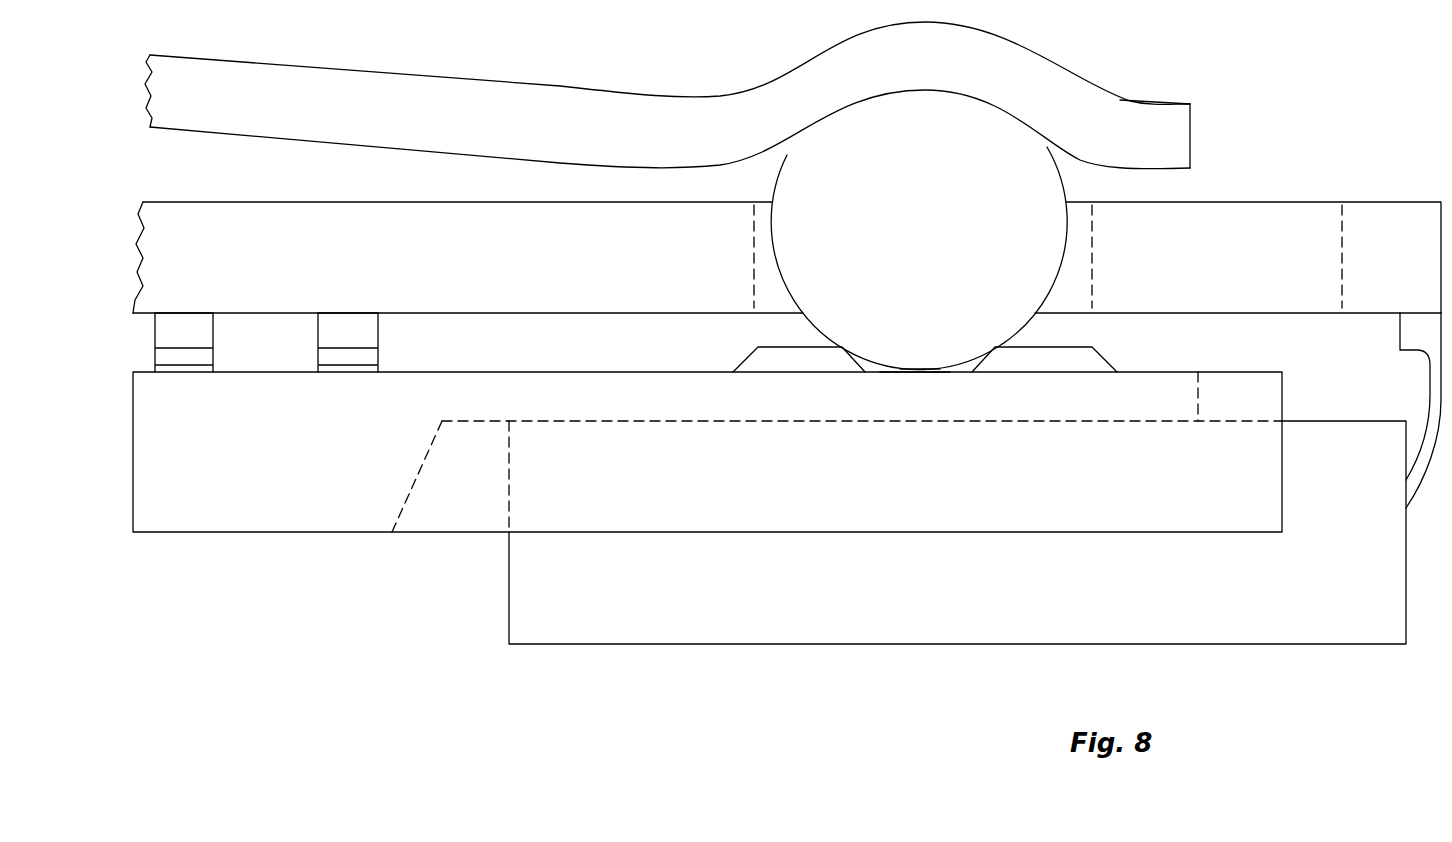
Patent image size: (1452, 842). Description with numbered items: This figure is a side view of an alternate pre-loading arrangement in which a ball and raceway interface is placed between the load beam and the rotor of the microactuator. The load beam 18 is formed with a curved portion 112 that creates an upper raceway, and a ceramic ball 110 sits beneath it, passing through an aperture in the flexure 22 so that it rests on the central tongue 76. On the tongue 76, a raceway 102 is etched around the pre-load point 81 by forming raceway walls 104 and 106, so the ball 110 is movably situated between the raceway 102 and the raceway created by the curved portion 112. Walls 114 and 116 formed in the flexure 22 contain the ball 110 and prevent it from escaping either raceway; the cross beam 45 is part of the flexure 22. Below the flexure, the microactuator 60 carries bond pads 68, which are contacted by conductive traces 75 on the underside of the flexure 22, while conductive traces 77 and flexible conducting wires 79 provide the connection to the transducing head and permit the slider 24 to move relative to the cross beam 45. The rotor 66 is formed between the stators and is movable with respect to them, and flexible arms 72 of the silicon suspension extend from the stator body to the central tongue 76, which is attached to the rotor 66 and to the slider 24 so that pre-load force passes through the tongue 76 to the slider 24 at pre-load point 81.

The load beam 18 is at (405, 72).
The curved portion 112 is at (998, 36).
The ceramic ball 110 is at (1055, 170).
The flexure 22 is at (1228, 202).
The cross beam 45 is at (1375, 202).
The wall 114 is at (753, 253).
The wall 116 is at (1093, 243).
The conductive traces 75 is at (318, 322).
The bond pads 68 is at (318, 355).
The microactuator 60 is at (267, 534).
The raceway wall 104 is at (750, 355).
The raceway wall 106 is at (1100, 350).
The raceway 102 is at (912, 373).
The pre-load point 81 is at (925, 373).
The central tongue 76 is at (1232, 361).
The conductive traces 77 is at (1400, 340).
The flexible conducting wires 79 is at (1395, 410).
The rotor 66 is at (420, 478).
The flexible arm 72 is at (650, 538).
The slider 24 is at (910, 645).